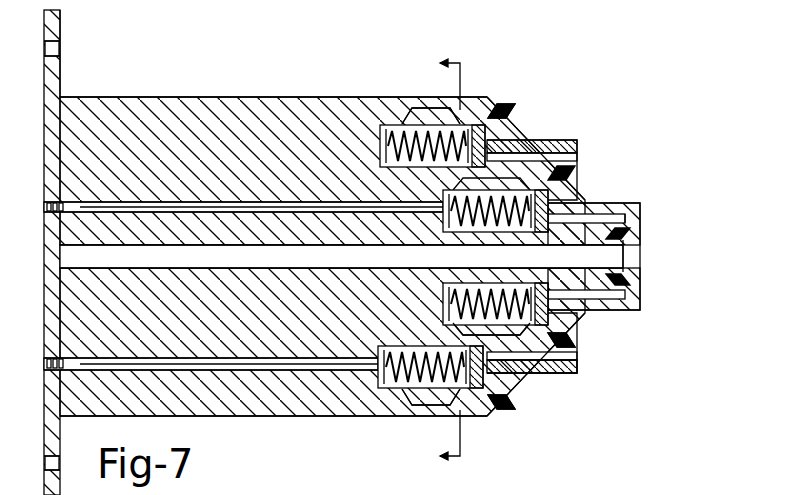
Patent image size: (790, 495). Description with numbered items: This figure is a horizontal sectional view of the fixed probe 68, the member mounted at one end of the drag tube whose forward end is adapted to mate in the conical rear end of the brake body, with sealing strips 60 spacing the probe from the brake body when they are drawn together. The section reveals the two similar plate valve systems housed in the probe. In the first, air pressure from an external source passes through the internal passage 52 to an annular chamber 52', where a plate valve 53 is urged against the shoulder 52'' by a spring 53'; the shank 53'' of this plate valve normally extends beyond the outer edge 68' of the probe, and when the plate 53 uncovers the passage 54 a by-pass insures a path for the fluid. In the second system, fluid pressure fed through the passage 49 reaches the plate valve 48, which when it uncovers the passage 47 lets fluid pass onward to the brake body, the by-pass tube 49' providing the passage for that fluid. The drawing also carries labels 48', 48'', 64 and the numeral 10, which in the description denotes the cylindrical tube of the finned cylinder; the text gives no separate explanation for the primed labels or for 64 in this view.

The cylindrical tube 10 is at (437, 261).
The passage 47 is at (582, 200).
The plate valve 48 is at (513, 244).
The pin 48' is at (474, 204).
The pin end 48'' is at (656, 204).
The passage 49 is at (243, 194).
The by-pass tube 49' is at (515, 278).
The internal passage 52 is at (211, 353).
The annular chamber 52' is at (425, 413).
The shoulder 52'' is at (406, 253).
The plate valve 53 is at (448, 266).
The spring 53' is at (430, 355).
The shank 53'' is at (590, 345).
The passage 54 is at (523, 373).
The sealing strips 60 is at (578, 195).
The slot 64 is at (152, 265).
The fixed probe 68 is at (251, 252).
The outer edge 68' is at (514, 417).